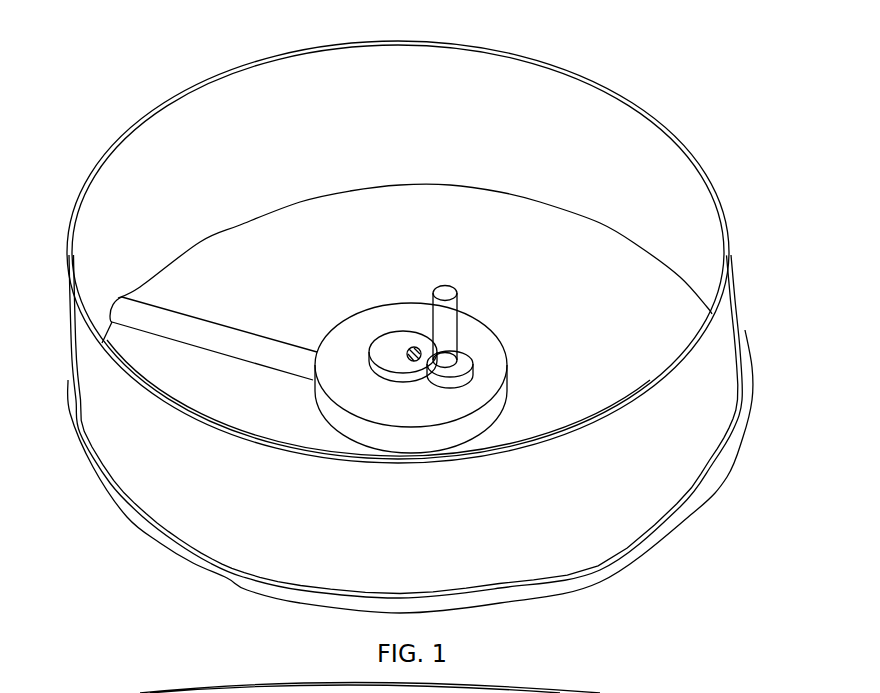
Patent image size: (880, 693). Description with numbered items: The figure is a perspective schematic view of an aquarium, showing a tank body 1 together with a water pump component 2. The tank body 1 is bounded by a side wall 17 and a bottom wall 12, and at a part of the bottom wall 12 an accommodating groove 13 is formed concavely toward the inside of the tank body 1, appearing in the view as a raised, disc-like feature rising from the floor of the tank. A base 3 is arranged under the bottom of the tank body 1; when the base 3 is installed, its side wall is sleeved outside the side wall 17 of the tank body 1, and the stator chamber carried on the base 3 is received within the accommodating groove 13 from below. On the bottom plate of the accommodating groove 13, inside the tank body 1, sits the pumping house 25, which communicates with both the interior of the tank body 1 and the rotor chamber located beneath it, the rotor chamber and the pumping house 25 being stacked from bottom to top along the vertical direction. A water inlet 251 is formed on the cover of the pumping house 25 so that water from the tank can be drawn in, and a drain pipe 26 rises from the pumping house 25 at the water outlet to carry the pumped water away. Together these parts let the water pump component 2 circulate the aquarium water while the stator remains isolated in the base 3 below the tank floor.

The tank body 1 is at (410, 311).
The side wall 17 is at (382, 100).
The bottom wall 12 is at (563, 228).
The base 3 is at (134, 526).
The water pump component 2 is at (486, 391).
The accommodating groove 13 is at (391, 417).
The pumping house 25 is at (418, 375).
The water inlet 251 is at (411, 349).
The drain pipe 26 is at (462, 316).